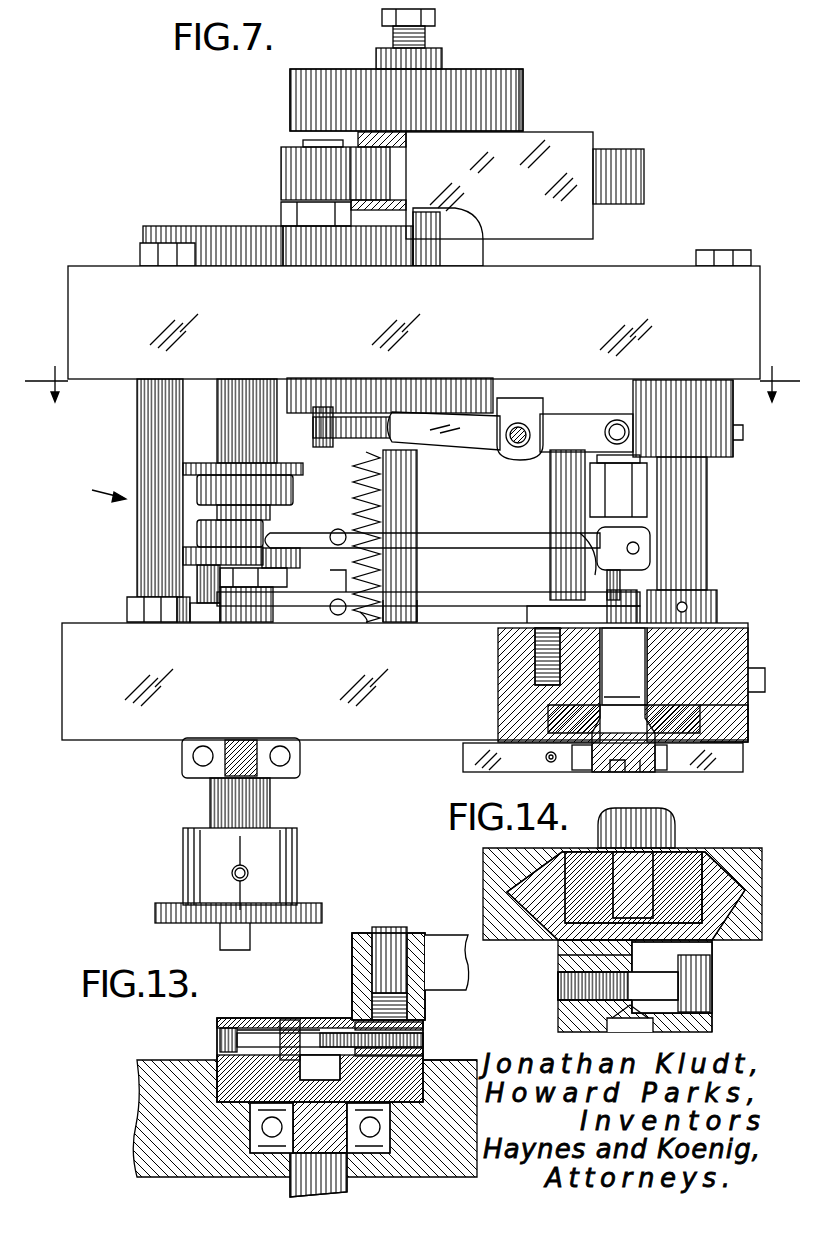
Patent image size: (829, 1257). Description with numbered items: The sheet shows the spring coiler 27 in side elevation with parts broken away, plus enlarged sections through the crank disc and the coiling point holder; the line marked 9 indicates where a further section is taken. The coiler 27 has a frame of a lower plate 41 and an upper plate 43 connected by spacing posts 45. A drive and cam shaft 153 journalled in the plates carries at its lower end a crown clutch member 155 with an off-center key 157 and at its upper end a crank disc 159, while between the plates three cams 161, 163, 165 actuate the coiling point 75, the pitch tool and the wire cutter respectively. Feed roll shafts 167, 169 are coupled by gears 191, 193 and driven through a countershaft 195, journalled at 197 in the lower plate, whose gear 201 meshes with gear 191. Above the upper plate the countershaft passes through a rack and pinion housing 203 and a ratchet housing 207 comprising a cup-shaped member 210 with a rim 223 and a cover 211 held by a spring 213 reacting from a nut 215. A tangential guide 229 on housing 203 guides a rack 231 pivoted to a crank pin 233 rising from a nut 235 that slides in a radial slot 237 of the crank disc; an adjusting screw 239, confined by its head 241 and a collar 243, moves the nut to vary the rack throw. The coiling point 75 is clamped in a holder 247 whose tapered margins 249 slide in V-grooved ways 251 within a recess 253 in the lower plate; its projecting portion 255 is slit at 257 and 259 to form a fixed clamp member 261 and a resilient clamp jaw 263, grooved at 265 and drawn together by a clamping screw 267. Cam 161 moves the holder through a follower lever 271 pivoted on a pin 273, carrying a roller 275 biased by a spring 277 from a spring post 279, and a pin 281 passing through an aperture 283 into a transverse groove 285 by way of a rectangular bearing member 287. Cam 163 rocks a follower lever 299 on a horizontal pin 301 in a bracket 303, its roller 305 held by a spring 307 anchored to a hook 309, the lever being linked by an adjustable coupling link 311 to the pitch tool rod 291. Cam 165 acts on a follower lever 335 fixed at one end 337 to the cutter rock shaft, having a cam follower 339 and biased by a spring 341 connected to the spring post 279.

In FIG. 7, the section line 9- 9 is at (412, 383).
In FIG. 7, the spring coiler 27 is at (96, 489).
In FIG. 7, the lower mechanism-supporting plate 41 is at (66, 674).
In FIG. 7, the upper mechanism-supporting plate 43 is at (73, 301).
In FIG. 7, the spacing posts 45 is at (141, 413).
In FIG. 7, the coiling point 75 is at (618, 765).
In FIG. 14, the coiling point 75 is at (645, 1031).
In FIG. 7, the spring coiler drive and cam shaft 153 is at (232, 396).
In FIG. 13, the spring coiler drive and cam shaft 153 is at (340, 1180).
In FIG. 7, the crown clutch member 155 is at (185, 869).
In FIG. 7, the off-center key 157 is at (222, 936).
In FIG. 7, the crank disc 159 is at (210, 232).
In FIG. 13, the crank disc 159 is at (245, 1018).
In FIG. 7, the coiling point cam 161 is at (200, 624).
In FIG. 7, the pitch tool cam 163 is at (196, 470).
In FIG. 7, the wire cutter cam 165 is at (190, 556).
In FIG. 7, the feed roll shaft 167 is at (553, 490).
In FIG. 7, the feed roll shaft 169 is at (700, 510).
In FIG. 7, the gear 191 is at (626, 398).
In FIG. 7, the gear 193 is at (712, 396).
In FIG. 7, the countershaft 195 is at (410, 481).
In FIG. 7, the countershaft journal 197 is at (415, 630).
In FIG. 7, the gear 201 is at (340, 386).
In FIG. 7, the rack and pinion housing 203 is at (505, 228).
In FIG. 7, the ratchet housing 207 is at (290, 105).
In FIG. 7, the cup-shaped member 210 is at (418, 130).
In FIG. 7, the cover 211 is at (368, 76).
In FIG. 7, the spring 213 is at (393, 40).
In FIG. 7, the nut 215 is at (382, 17).
In FIG. 7, the rim 223 is at (524, 110).
In FIG. 7, the tangential guide 229 is at (585, 157).
In FIG. 7, the rack 231 is at (378, 160).
In FIG. 13, the rack 231 is at (452, 938).
In FIG. 7, the crank pin 233 is at (303, 143).
In FIG. 13, the crank pin 233 is at (390, 930).
In FIG. 7, the nut 235 is at (352, 270).
In FIG. 13, the nut 235 is at (425, 1060).
In FIG. 13, the radial slot 237 is at (335, 1028).
In FIG. 13, the adjusting screw 239 is at (425, 1040).
In FIG. 13, the screw head 241 is at (222, 1040).
In FIG. 13, the collar 243 is at (287, 1020).
In FIG. 7, the coiling point holder 247 is at (530, 752).
In FIG. 14, the coiling point holder 247 is at (560, 853).
In FIG. 14, the tapered side margins 249 is at (745, 850).
In FIG. 7, the V-grooved ways 251 is at (548, 718).
In FIG. 14, the V-grooved ways 251 is at (725, 858).
In FIG. 7, the recess 253 is at (680, 707).
In FIG. 14, the projecting portion 255 is at (560, 957).
In FIG. 7, the slit 257 is at (590, 760).
In FIG. 14, the slit 257 is at (560, 972).
In FIG. 7, the slit 259 is at (660, 755).
In FIG. 14, the slit 259 is at (705, 958).
In FIG. 7, the fixed clamp member 261 is at (552, 763).
In FIG. 14, the fixed clamp member 261 is at (560, 1020).
In FIG. 7, the clamp jaw 263 is at (648, 765).
In FIG. 14, the clamp jaw 263 is at (712, 1030).
In FIG. 14, the groove 265 is at (614, 1030).
In FIG. 14, the clamping screw 267 is at (700, 996).
In FIG. 7, the cam follower lever 271 is at (462, 606).
In FIG. 7, the pin 273 is at (535, 667).
In FIG. 7, the cam follower roller 275 is at (238, 630).
In FIG. 7, the spring 277 is at (333, 626).
In FIG. 7, the spring post 279 is at (343, 630).
In FIG. 7, the pin 281 is at (622, 633).
In FIG. 14, the pin 281 is at (635, 823).
In FIG. 7, the aperture 283 is at (656, 656).
In FIG. 7, the transverse groove 285 is at (605, 711).
In FIG. 14, the transverse groove 285 is at (688, 858).
In FIG. 7, the rectangular bearing member 287 is at (660, 752).
In FIG. 14, the rectangular bearing member 287 is at (595, 858).
In FIG. 7, the pitch tool rod 291 is at (625, 576).
In FIG. 7, the cam follower lever 299 is at (478, 446).
In FIG. 7, the horizontal pin 301 is at (528, 456).
In FIG. 7, the bracket 303 is at (518, 398).
In FIG. 7, the follower roller 305 is at (330, 430).
In FIG. 7, the spring 307 is at (356, 488).
In FIG. 7, the hook 309 is at (372, 628).
In FIG. 7, the adjustable coupling link 311 is at (612, 505).
In FIG. 7, the cam follower lever 335 is at (478, 540).
In FIG. 7, the lever end 337 is at (586, 540).
In FIG. 7, the cam follower 339 is at (298, 563).
In FIG. 7, the spring 341 is at (337, 533).